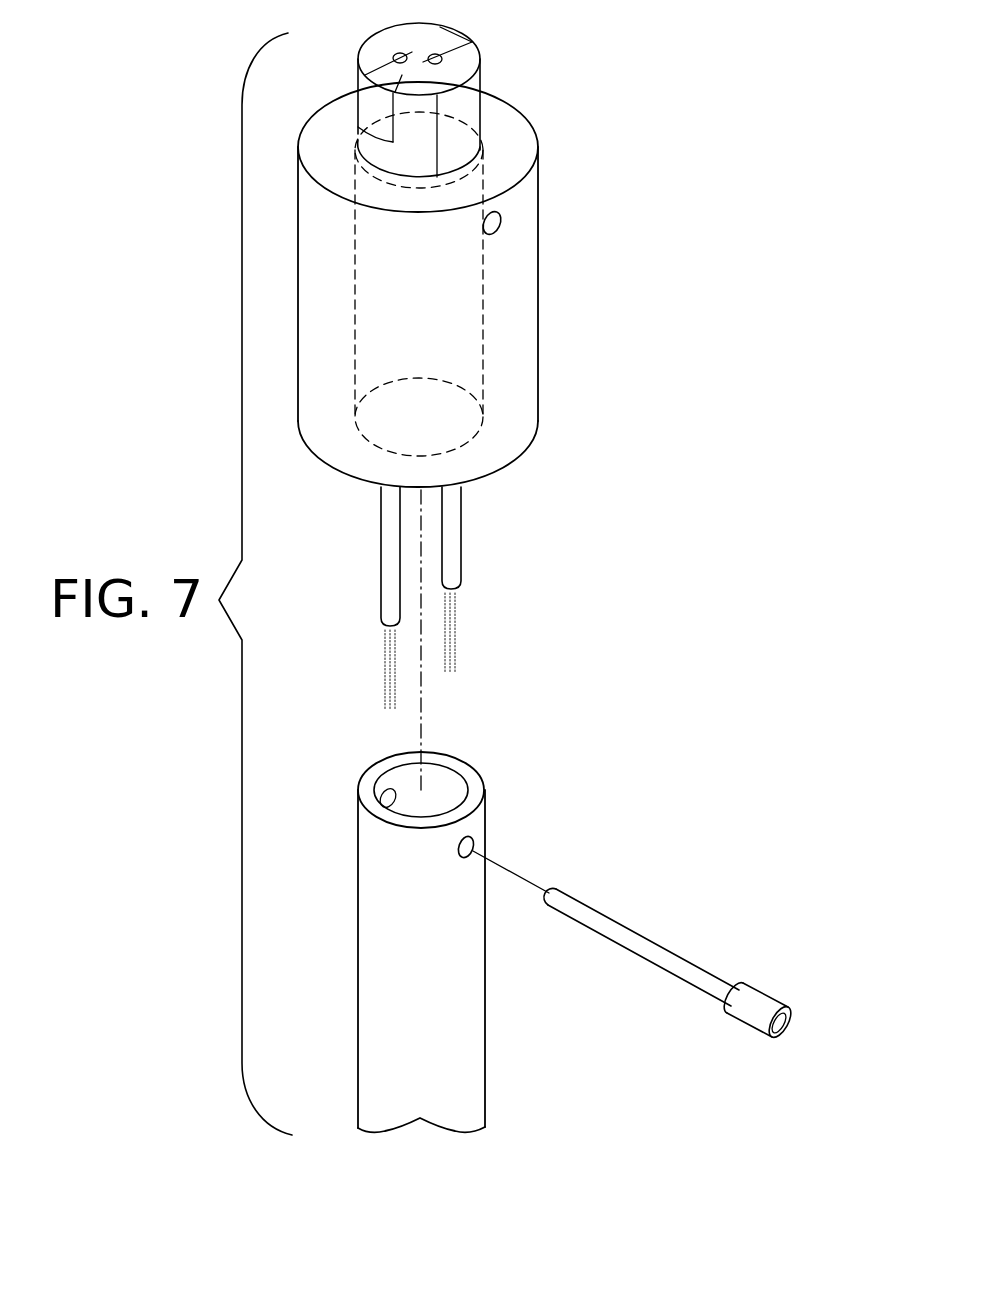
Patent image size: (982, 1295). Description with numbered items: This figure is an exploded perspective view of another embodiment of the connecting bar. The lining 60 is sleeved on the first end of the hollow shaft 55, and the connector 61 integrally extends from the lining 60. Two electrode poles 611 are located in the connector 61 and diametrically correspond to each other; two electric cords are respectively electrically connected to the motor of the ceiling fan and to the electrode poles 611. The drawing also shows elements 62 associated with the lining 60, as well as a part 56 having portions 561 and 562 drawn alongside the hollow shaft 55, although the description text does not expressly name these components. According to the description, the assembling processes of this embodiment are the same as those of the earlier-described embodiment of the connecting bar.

The hollow shaft 55 is at (478, 1008).
The pin 56 is at (662, 927).
The head portion of pin 561 is at (758, 993).
The shaft portion of pin 562 is at (560, 895).
The lining 60 is at (568, 322).
The connector 61 is at (460, 107).
The electrode poles 611 is at (462, 33).
The pins 62 is at (455, 548).